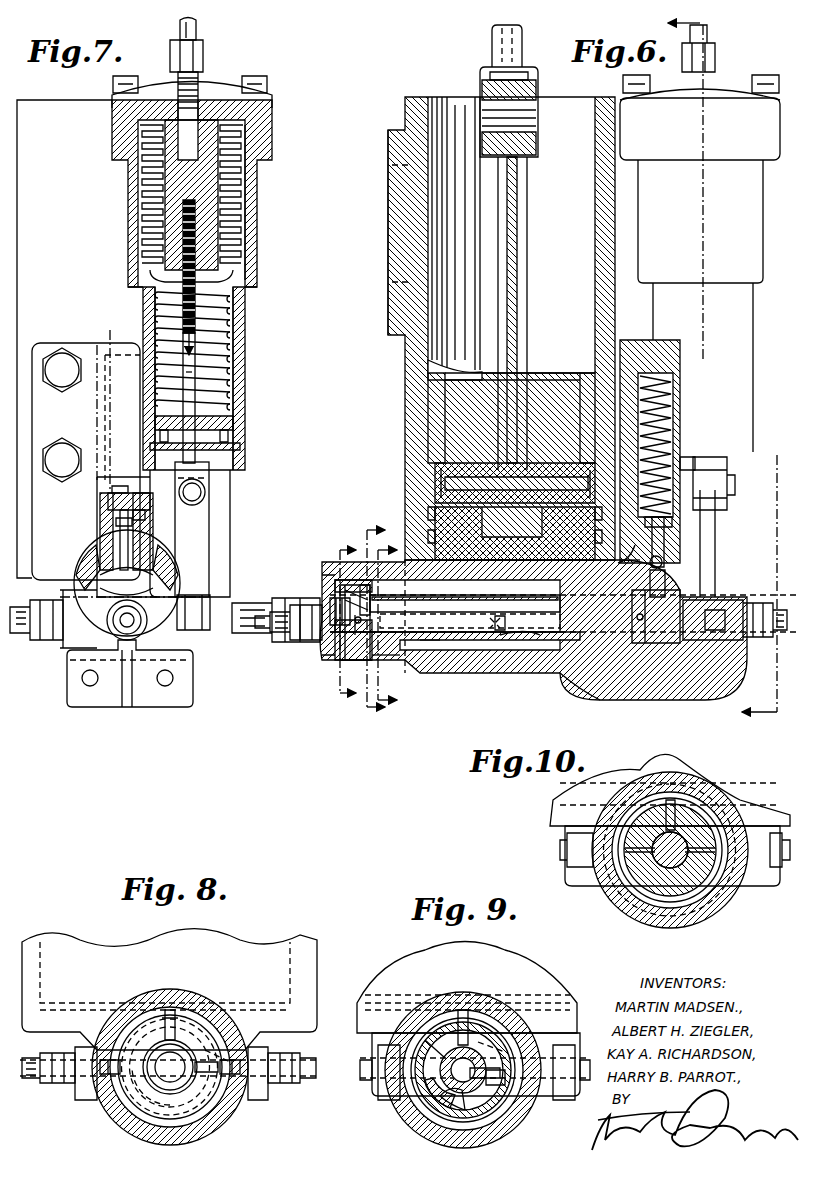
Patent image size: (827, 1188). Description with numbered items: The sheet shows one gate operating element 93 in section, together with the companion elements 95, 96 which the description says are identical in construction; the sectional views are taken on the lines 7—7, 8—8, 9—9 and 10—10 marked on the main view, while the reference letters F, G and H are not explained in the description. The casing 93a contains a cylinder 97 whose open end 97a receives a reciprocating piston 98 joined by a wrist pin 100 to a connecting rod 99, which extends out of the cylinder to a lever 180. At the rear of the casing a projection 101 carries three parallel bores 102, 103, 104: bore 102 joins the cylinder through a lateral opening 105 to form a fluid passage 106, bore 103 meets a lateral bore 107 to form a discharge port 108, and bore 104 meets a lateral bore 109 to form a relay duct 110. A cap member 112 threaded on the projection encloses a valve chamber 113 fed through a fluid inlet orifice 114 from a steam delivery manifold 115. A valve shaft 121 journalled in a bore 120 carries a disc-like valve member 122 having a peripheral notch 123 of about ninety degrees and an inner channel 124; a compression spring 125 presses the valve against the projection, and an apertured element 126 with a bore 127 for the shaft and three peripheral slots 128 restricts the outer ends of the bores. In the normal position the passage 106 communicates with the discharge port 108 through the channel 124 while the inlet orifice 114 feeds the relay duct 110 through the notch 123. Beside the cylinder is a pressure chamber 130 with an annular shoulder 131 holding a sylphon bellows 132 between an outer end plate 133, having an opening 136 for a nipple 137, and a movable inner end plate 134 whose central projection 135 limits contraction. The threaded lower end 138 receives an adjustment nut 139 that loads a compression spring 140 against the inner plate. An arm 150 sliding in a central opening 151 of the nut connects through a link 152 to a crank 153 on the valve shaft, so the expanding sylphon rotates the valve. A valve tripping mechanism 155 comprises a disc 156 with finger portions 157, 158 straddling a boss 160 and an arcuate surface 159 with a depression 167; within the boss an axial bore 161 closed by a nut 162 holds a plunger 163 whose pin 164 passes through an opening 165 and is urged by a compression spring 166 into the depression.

In FIG. 6, the section line 7— 7 is at (718, 379).
In FIG. 6, the section line 8— 8 is at (340, 621).
In FIG. 6, the section line 9— 9 is at (366, 623).
In FIG. 6, the section line 10— 10 is at (388, 628).
In FIG. 6, the gate operating element 93 is at (390, 235).
In FIG. 8, the gate operating element 93 is at (297, 936).
In FIG. 6, the casing 93a is at (396, 262).
In FIG. 8, the gate operating element 95 is at (318, 957).
In FIG. 8, the gate operating element 96 is at (43, 955).
In FIG. 6, the cylinder 97 is at (445, 333).
In FIG. 6, the open end 97a is at (434, 105).
In FIG. 6, the piston 98 is at (447, 400).
In FIG. 6, the connecting rod 99 is at (523, 258).
In FIG. 6, the wrist pin 100 is at (522, 488).
In FIG. 6, the projection 101 is at (365, 592).
In FIG. 6, the bore 102 is at (415, 592).
In FIG. 9, the bore 102 is at (452, 1010).
In FIG. 6, the bore 103 is at (441, 632).
In FIG. 9, the bore 103 is at (400, 1052).
In FIG. 9, the bore 104 is at (560, 1022).
In FIG. 6, the laterally extending opening 105 is at (452, 598).
In FIG. 8, the laterally extending opening 105 is at (218, 1000).
In FIG. 9, the laterally extending opening 105 is at (500, 1000).
In FIG. 6, the fluid passage 106 is at (488, 556).
In FIG. 10, the fluid passage 106 is at (745, 786).
In FIG. 8, the fluid passage 106 is at (136, 1000).
In FIG. 6, the laterally extending bore 107 is at (506, 642).
In FIG. 8, the laterally extending bore 107 is at (106, 1032).
In FIG. 9, the laterally extending bore 107 is at (380, 1096).
In FIG. 6, the discharge port 108 is at (438, 680).
In FIG. 10, the discharge port 108 is at (592, 888).
In FIG. 9, the discharge port 108 is at (411, 1100).
In FIG. 8, the lateral bore 109 is at (256, 1036).
In FIG. 9, the lateral bore 109 is at (525, 1095).
In FIG. 10, the relay duct 110 is at (738, 900).
In FIG. 9, the relay duct 110 is at (512, 1120).
In FIG. 6, the cap member 112 is at (321, 594).
In FIG. 6, the valve chamber 113 is at (355, 666).
In FIG. 8, the valve chamber 113 is at (177, 1127).
In FIG. 9, the valve chamber 113 is at (432, 1022).
In FIG. 6, the fluid inlet orifice 114 is at (312, 641).
In FIG. 7, the steam delivery manifold 115 is at (234, 616).
In FIG. 6, the bore 120 is at (500, 632).
In FIG. 10, the bore 120 is at (664, 800).
In FIG. 6, the valve shaft 121 is at (572, 625).
In FIG. 6, the valve member 122 is at (350, 662).
In FIG. 8, the valve member 122 is at (164, 1110).
In FIG. 9, the valve member 122 is at (481, 1125).
In FIG. 8, the peripheral notch 123 is at (182, 1035).
In FIG. 9, the peripheral notch 123 is at (505, 1032).
In FIG. 9, the partially circular channel 124 is at (450, 1120).
In FIG. 6, the compression spring 125 is at (338, 656).
In FIG. 8, the compression spring 125 is at (152, 1088).
In FIG. 6, the apertured element 126 is at (373, 662).
In FIG. 10, the apertured element 126 is at (690, 905).
In FIG. 6, the bore 127 is at (400, 656).
In FIG. 10, the bore 127 is at (643, 925).
In FIG. 10, the peripheral slots 128 is at (722, 812).
In FIG. 7, the pressure chamber 130 is at (255, 210).
In FIG. 7, the annular shoulder 131 is at (240, 282).
In FIG. 7, the sylphon bellows 132 is at (248, 176).
In FIG. 7, the outer end plate 133 is at (258, 78).
In FIG. 7, the inner end plate 134 is at (243, 300).
In FIG. 7, the central projection 135 is at (152, 178).
In FIG. 7, the opening 136 is at (140, 126).
In FIG. 7, the nipple 137 is at (199, 74).
In FIG. 7, the internal threads 138 is at (236, 398).
In FIG. 7, the adjustment nut 139 is at (218, 450).
In FIG. 7, the compression spring 140 is at (246, 330).
In FIG. 7, the arm 150 is at (188, 373).
In FIG. 6, the arm 150 is at (722, 470).
In FIG. 7, the central opening 151 is at (226, 424).
In FIG. 7, the link 152 is at (196, 540).
In FIG. 6, the link 152 is at (714, 510).
In FIG. 7, the crank 153 is at (181, 614).
In FIG. 7, the valve tripping mechanism 155 is at (88, 540).
In FIG. 6, the valve tripping mechanism 155 is at (667, 580).
In FIG. 7, the disc 156 is at (93, 607).
In FIG. 6, the disc 156 is at (657, 621).
In FIG. 7, the finger portion 157 is at (86, 590).
In FIG. 7, the finger portion 158 is at (160, 560).
In FIG. 7, the arcuate surface 159 is at (100, 557).
In FIG. 7, the boss 160 is at (110, 428).
In FIG. 6, the boss 160 is at (663, 556).
In FIG. 6, the axial bore 161 is at (692, 456).
In FIG. 6, the nut 162 is at (682, 346).
In FIG. 7, the plunger 163 is at (120, 490).
In FIG. 6, the plunger 163 is at (650, 538).
In FIG. 7, the pin 164 is at (128, 530).
In FIG. 6, the pin 164 is at (662, 547).
In FIG. 7, the opening 165 is at (180, 572).
In FIG. 6, the opening 165 is at (650, 562).
In FIG. 7, the compression spring 166 is at (150, 498).
In FIG. 6, the compression spring 166 is at (671, 404).
In FIG. 7, the depression 167 is at (126, 583).
In FIG. 6, the depression 167 is at (661, 565).
In FIG. 6, the lever 180 is at (519, 50).
In FIG. 7, the fluid flow direction F is at (184, 348).
In FIG. 7, the axis G is at (72, 597).
In FIG. 8, the axis H is at (210, 1047).
In FIG. 9, the axis H is at (491, 1037).